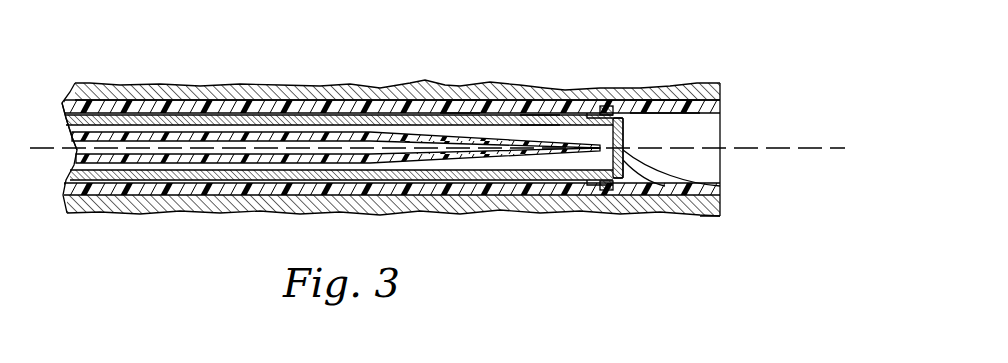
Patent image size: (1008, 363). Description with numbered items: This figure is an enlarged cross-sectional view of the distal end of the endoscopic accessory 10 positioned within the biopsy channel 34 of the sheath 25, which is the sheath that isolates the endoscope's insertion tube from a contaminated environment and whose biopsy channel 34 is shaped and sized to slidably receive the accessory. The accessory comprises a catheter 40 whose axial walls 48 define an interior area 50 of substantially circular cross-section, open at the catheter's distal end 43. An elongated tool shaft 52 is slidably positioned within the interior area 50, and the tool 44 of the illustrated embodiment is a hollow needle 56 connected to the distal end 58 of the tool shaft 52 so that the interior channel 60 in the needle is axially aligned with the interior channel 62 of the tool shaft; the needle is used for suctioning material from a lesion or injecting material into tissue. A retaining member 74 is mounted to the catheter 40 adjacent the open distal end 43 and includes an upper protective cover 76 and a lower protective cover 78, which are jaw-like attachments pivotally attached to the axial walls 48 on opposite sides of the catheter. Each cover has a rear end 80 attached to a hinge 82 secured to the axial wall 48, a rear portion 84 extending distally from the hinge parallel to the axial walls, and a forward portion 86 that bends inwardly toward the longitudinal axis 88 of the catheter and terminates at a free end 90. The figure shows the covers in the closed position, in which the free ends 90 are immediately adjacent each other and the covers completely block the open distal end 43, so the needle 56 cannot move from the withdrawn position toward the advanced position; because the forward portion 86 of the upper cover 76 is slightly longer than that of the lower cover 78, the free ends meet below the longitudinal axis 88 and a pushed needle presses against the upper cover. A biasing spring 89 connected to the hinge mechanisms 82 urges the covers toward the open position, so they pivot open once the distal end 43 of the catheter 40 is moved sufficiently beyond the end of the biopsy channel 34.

The endoscopic accessory 10 is at (103, 96).
The sheath 25 is at (300, 97).
The biopsy channel 34 is at (237, 107).
The catheter 40 is at (158, 106).
The distal end of the catheter 43 is at (648, 100).
The tool 44 is at (441, 176).
The axial walls 48 is at (462, 110).
The interior area 50 is at (412, 132).
The tool shaft 52 is at (150, 160).
The hollow needle 56 is at (495, 160).
The distal end of the tool shaft 58 is at (310, 152).
The interior channel of the needle 60 is at (405, 155).
The interior channel of the tool shaft 62 is at (75, 142).
The retaining member 74 is at (628, 122).
The upper protective cover 76 is at (706, 92).
The lower protective cover 78 is at (622, 182).
The rear end 80 is at (592, 108).
The hinge 82 is at (535, 115).
The rear portion 84 is at (598, 114).
The forward portion 86 is at (655, 136).
The longitudinal axis 88 is at (778, 152).
The biasing spring 89 is at (606, 190).
The free end 90 is at (632, 178).